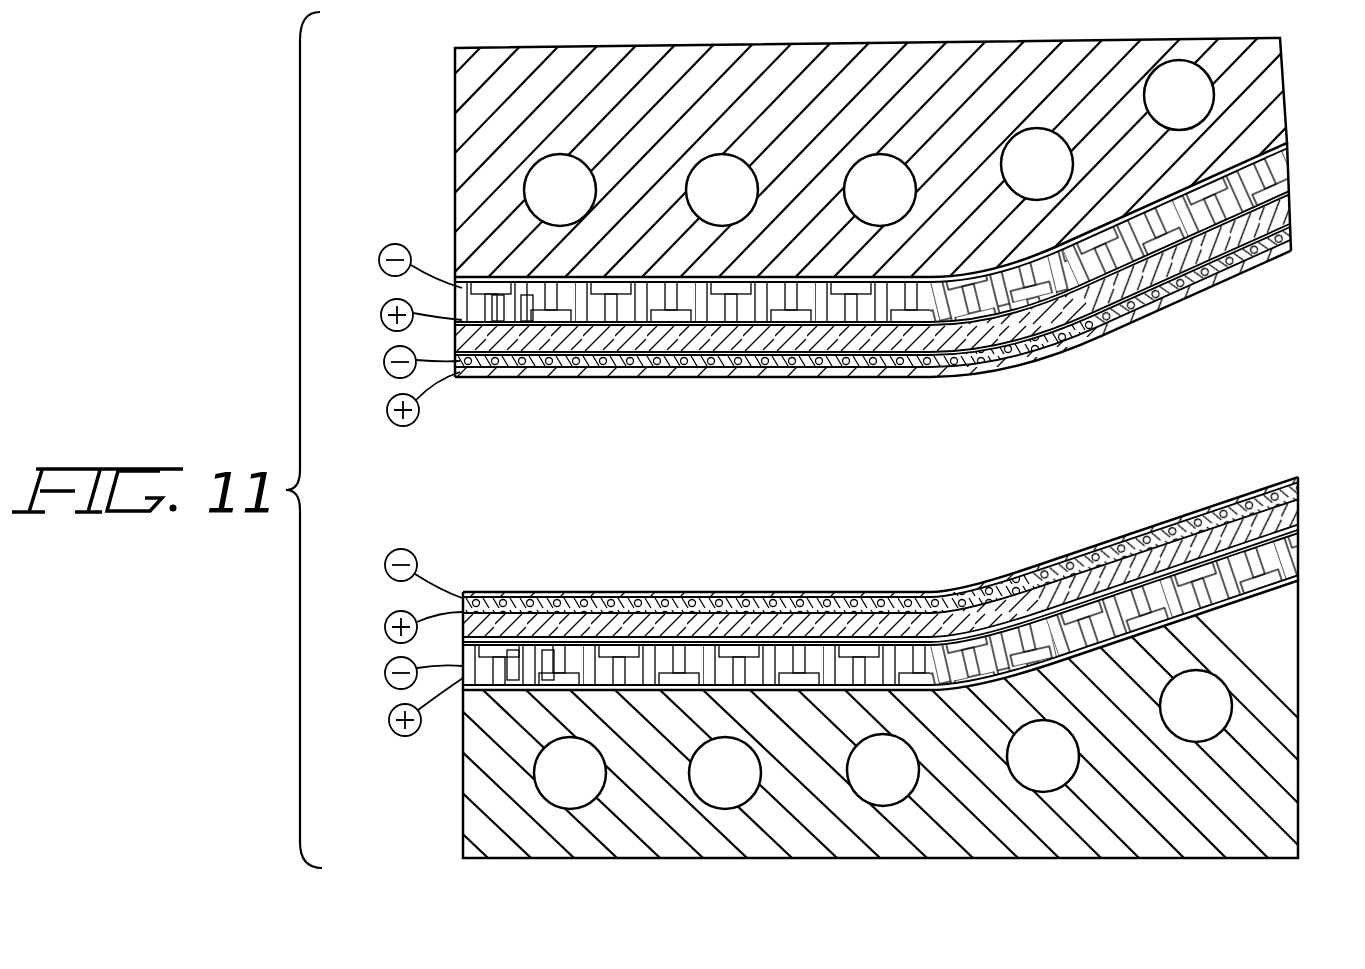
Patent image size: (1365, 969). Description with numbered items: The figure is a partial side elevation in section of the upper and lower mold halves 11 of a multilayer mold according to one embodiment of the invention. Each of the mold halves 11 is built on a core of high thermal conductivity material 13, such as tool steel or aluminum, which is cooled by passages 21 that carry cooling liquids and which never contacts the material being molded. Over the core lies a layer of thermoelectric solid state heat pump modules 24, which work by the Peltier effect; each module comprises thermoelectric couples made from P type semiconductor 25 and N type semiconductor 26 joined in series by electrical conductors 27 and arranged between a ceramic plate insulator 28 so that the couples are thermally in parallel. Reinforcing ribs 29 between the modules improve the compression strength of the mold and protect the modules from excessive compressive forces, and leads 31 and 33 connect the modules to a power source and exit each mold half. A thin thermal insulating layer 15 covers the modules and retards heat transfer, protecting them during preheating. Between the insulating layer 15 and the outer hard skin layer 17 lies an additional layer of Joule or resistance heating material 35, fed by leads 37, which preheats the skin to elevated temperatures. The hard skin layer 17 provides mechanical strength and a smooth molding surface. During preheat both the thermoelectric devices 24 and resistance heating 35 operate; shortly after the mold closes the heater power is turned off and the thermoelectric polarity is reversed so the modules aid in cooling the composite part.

The mold halves 11 is at (440, 132).
The core of high thermal conductivity material 13 is at (452, 66).
The thermal insulating layer 15 is at (1292, 212).
The hard skin layer 17 is at (1284, 250).
The passages 21 is at (688, 192).
The thermoelectric solid state heat pump modules 24 is at (1003, 300).
The P type semiconductor 25 is at (498, 302).
The N type semiconductor 26 is at (462, 316).
The electrical conductors 27 is at (478, 290).
The ceramic plate insulator 28 is at (1290, 147).
The reinforcing ribs 29 is at (778, 332).
The leads 31 is at (462, 292).
The leads 33 is at (462, 303).
The resistance heating material 35 is at (1293, 233).
The leads 37 is at (452, 376).